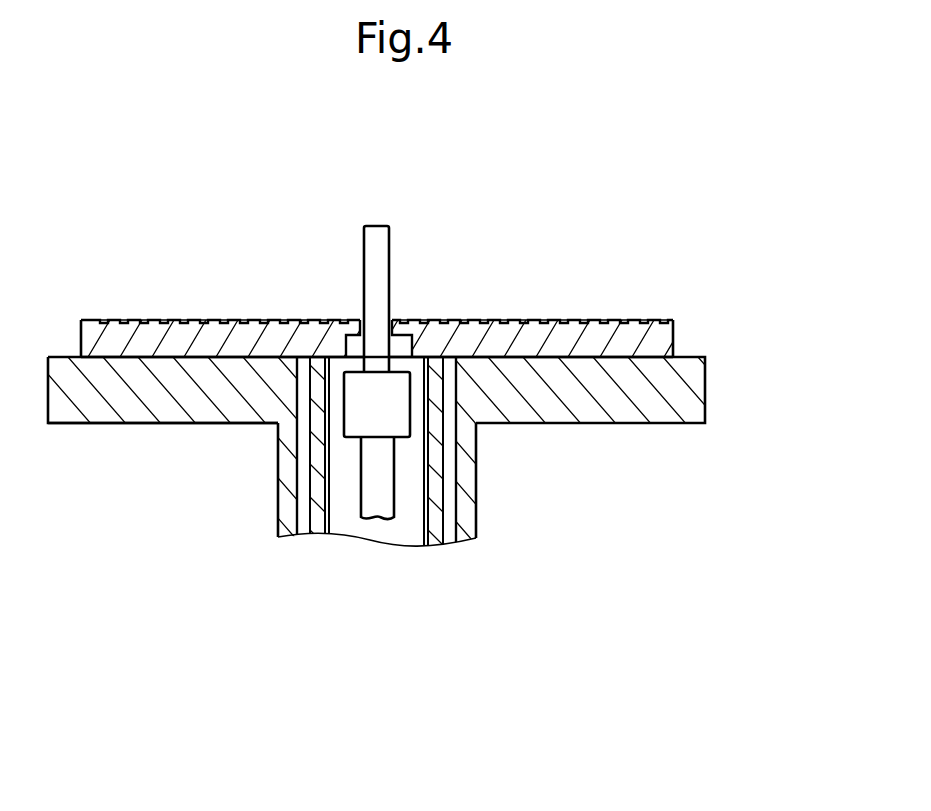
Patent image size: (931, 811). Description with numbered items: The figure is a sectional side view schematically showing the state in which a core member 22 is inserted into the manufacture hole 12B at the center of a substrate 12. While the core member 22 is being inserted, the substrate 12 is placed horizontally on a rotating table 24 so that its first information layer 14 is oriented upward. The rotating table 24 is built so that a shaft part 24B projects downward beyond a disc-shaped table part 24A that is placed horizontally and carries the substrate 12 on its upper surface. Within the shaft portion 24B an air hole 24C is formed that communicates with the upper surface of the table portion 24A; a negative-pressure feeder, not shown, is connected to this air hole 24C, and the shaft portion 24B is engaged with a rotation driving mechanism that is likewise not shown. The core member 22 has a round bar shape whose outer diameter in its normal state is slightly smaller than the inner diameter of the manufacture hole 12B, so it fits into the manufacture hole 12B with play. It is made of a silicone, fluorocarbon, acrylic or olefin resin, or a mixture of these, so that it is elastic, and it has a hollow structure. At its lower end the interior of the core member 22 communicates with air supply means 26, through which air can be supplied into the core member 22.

The substrate 12 is at (674, 340).
The manufacture hole 12B is at (392, 340).
The first information layer 14 is at (575, 321).
The core member 22 is at (391, 232).
The rotating table 24 is at (725, 401).
The table part 24A is at (85, 424).
The shaft part 24B is at (278, 515).
The air hole 24C is at (298, 540).
The air supply means 26 is at (412, 437).